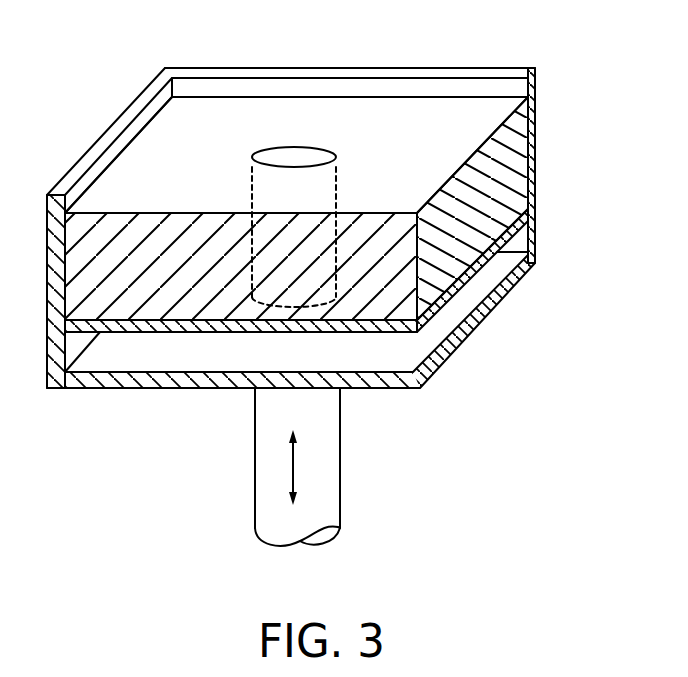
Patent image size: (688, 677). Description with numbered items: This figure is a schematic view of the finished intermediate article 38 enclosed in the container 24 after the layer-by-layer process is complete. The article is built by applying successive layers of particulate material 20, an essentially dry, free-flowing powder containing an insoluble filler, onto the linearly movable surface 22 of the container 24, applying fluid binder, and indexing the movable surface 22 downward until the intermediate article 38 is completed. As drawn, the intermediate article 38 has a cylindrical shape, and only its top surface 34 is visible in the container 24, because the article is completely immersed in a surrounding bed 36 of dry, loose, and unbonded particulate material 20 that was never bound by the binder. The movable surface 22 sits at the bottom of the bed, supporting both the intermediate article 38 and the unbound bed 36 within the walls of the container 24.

The particulate material 20 is at (390, 105).
The linearly movable surface 22 is at (483, 258).
The container 24 is at (538, 112).
The top surface 34 is at (293, 147).
The surrounding bed 36 is at (523, 178).
The intermediate article 38 is at (342, 186).